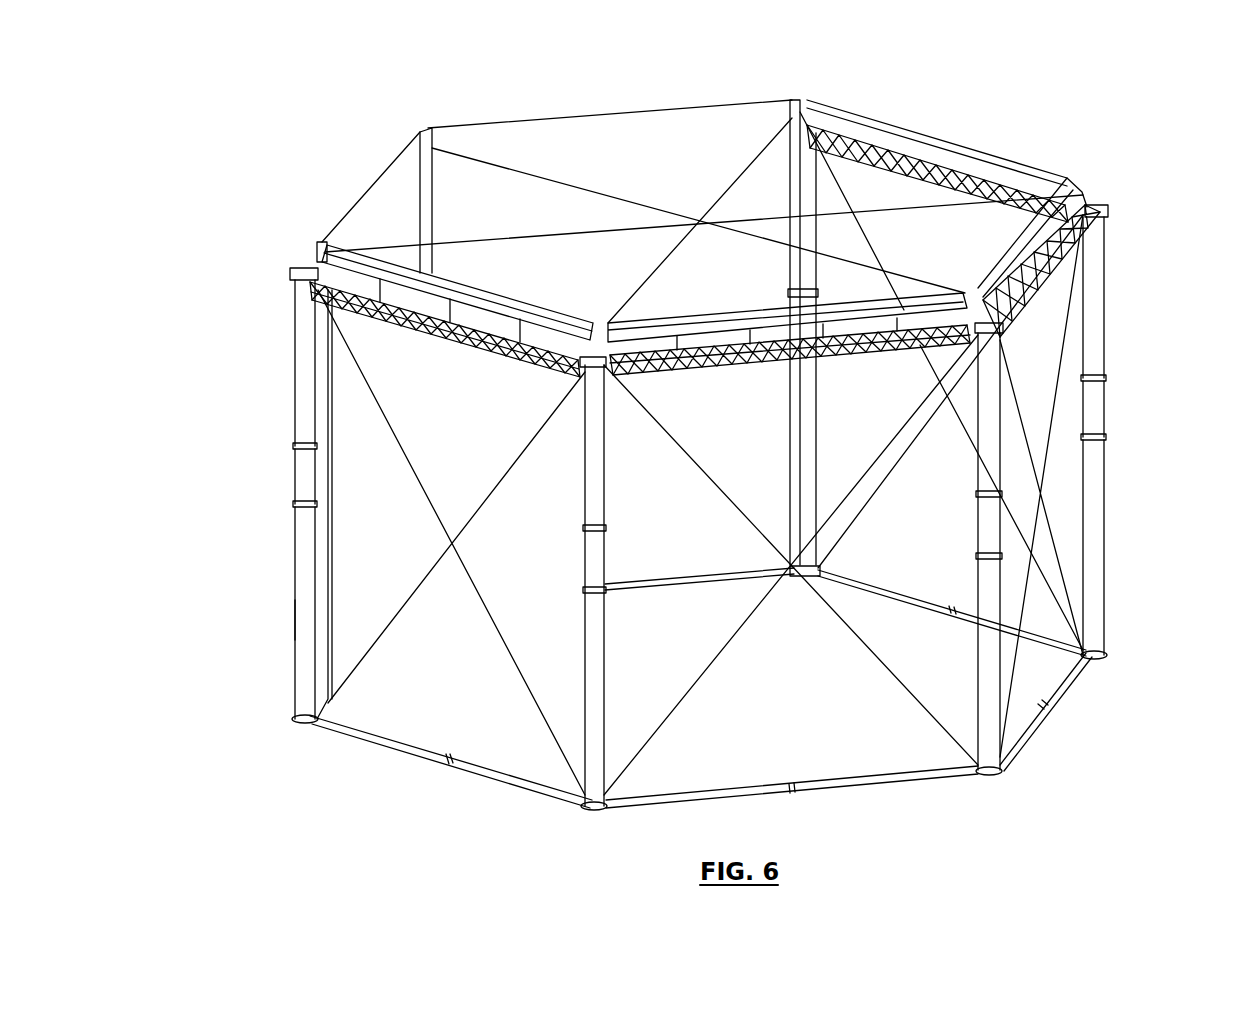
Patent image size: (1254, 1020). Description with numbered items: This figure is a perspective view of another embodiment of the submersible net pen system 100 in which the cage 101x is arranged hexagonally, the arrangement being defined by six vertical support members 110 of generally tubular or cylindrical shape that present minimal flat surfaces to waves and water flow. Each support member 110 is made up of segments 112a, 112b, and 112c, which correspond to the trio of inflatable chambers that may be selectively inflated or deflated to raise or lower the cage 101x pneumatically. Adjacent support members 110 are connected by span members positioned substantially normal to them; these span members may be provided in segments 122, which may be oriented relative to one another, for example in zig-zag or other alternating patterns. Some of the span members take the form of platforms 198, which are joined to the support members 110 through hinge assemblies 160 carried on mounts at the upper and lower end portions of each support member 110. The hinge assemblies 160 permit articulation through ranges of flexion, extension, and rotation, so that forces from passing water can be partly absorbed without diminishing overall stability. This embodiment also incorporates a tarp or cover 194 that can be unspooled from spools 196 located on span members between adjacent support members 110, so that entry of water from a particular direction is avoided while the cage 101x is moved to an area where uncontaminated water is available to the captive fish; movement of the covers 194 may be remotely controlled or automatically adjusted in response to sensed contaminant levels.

The submersible net pen system 100 is at (310, 187).
The cage 101x is at (295, 618).
The support member 110 is at (705, 510).
The support member segment 112a is at (300, 412).
The support member segment 112b is at (300, 471).
The support member segment 112c is at (237, 424).
The span member segment 122 is at (426, 754).
The hinge assembly 160 is at (292, 272).
The tarp or cover 194 is at (380, 195).
The spool 196 is at (490, 352).
The platform 198 is at (1087, 250).